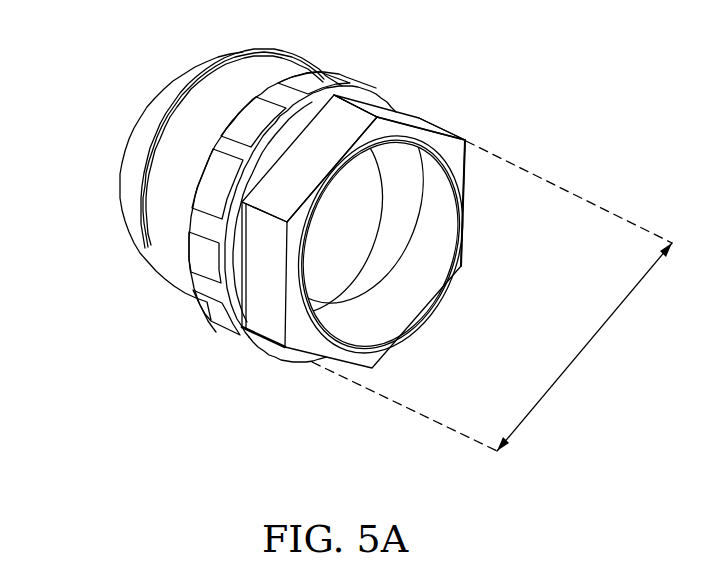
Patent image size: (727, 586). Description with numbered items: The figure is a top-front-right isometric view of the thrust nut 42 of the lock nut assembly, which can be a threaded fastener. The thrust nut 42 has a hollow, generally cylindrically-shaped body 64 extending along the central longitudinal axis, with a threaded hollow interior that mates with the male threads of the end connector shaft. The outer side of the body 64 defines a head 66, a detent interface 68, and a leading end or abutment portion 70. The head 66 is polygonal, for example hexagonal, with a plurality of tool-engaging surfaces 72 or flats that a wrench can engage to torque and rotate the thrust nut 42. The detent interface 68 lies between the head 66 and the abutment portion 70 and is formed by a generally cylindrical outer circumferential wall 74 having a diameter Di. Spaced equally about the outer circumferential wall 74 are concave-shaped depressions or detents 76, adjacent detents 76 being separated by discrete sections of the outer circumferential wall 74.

The thrust nut 42 is at (510, 89).
The body 64 is at (370, 187).
The head 66 is at (269, 385).
The detent interface 68 is at (235, 194).
The abutment portion 70 is at (102, 224).
The tool-engaging surfaces 72 is at (410, 118).
The outer circumferential wall 74 is at (210, 218).
The detents 76 is at (245, 117).